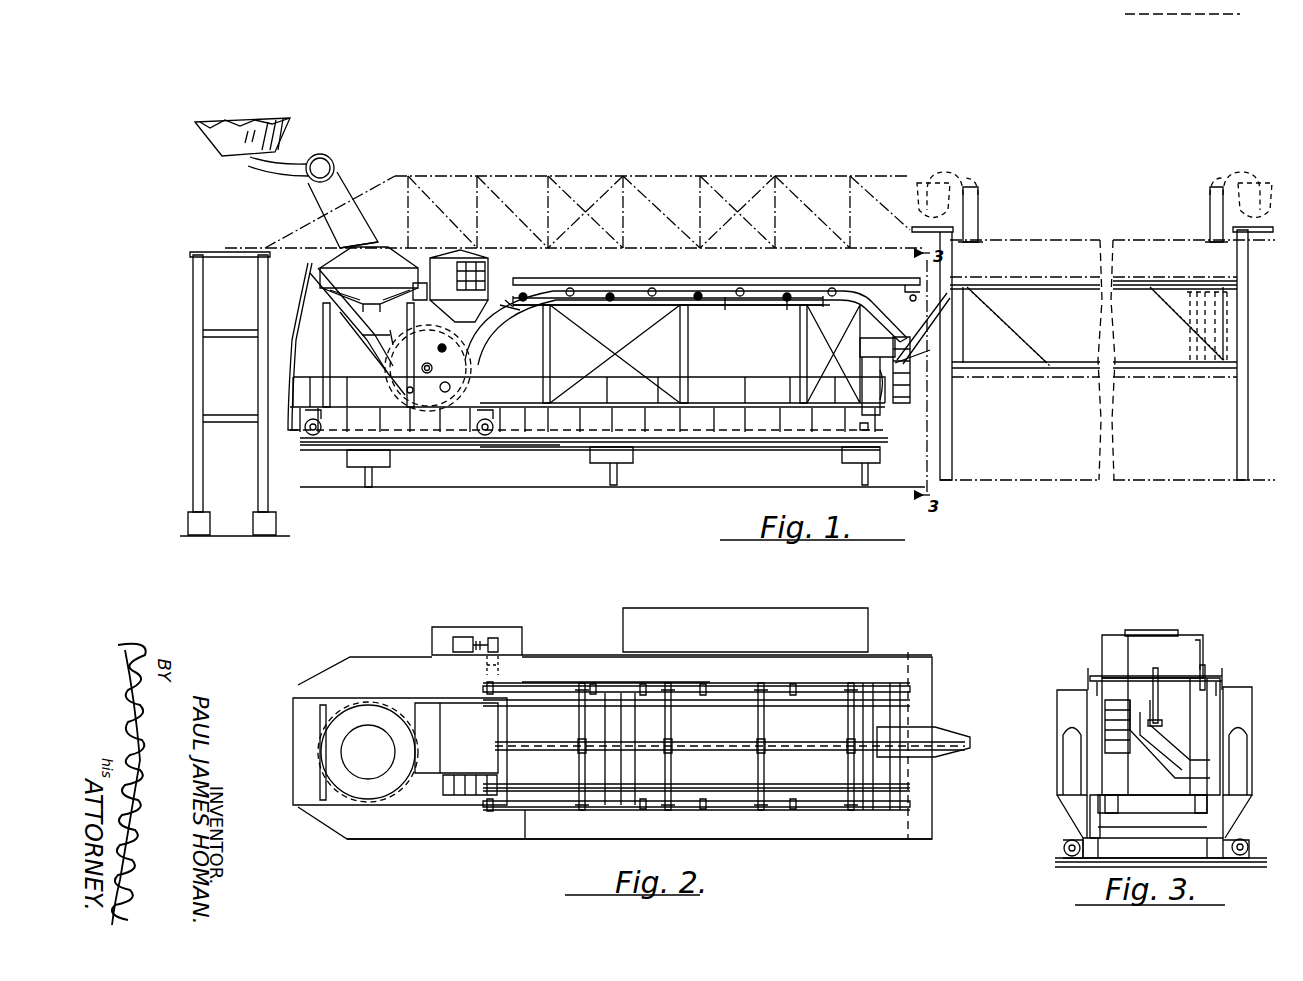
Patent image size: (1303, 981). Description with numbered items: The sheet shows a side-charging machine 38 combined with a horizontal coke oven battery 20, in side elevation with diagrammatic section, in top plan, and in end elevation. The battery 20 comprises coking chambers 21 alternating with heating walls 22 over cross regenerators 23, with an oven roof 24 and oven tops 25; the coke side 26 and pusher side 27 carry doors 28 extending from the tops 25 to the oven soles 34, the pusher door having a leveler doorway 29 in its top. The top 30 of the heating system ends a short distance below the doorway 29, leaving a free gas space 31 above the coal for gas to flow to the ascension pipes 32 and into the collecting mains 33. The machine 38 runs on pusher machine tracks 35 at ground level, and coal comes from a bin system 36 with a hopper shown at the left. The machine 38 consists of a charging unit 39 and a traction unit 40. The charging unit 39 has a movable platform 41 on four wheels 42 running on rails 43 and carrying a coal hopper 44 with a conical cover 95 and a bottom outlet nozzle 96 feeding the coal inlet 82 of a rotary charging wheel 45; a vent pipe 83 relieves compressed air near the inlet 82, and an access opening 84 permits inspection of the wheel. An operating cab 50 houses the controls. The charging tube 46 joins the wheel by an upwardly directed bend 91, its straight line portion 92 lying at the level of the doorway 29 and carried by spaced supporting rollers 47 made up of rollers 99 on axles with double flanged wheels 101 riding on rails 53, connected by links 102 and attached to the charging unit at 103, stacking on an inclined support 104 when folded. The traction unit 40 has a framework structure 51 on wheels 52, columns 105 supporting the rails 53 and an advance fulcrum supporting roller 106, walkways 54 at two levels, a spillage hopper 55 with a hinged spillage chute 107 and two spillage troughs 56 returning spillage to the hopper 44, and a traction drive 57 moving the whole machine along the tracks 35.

In FIG. 1, the horizontal coking retort oven battery 20 is at (1055, 470).
In FIG. 1, the coking chamber 21 is at (1082, 344).
In FIG. 1, the heating wall 22 is at (1227, 312).
In FIG. 1, the cross regenerator 23 is at (1074, 442).
In FIG. 1, the oven roof 24 is at (1042, 247).
In FIG. 1, the oven top 25 is at (1160, 277).
In FIG. 1, the coke side 26 is at (1240, 420).
In FIG. 1, the pusher side 27 is at (950, 433).
In FIG. 1, the coke oven door 28 is at (968, 345).
In FIG. 1, the leveler doorway 29 is at (985, 292).
In FIG. 1, the top of heating system 30 is at (1177, 324).
In FIG. 1, the free gas space 31 is at (1218, 286).
In FIG. 1, the ascension pipe 32 is at (298, 168).
In FIG. 1, the collecting main 33 is at (932, 185).
In FIG. 1, the oven sole 34 is at (1162, 362).
In FIG. 1, the pusher machine track 35 is at (372, 487).
In FIG. 3, the pusher machine track 35 is at (1055, 864).
In FIG. 1, the bin system 36 is at (205, 128).
In FIG. 1, the side charging machine 38 is at (725, 380).
In FIG. 2, the side charging machine 38 is at (572, 661).
In FIG. 1, the charging unit 39 is at (340, 397).
In FIG. 2, the charging unit 39 is at (360, 706).
In FIG. 3, the charging unit 39 is at (1128, 800).
In FIG. 1, the traction unit 40 is at (335, 450).
In FIG. 2, the traction unit 40 is at (382, 661).
In FIG. 3, the traction unit 40 is at (1080, 810).
In FIG. 2, the movable platform 41 is at (298, 738).
In FIG. 1, the wheel 42 is at (480, 433).
In FIG. 3, the wheel 42 is at (1130, 812).
In FIG. 1, the rail 43 is at (495, 443).
In FIG. 2, the rail 43 is at (704, 782).
In FIG. 3, the rail 43 is at (1175, 830).
In FIG. 1, the coal hopper 44 is at (373, 279).
In FIG. 2, the coal hopper 44 is at (398, 758).
In FIG. 1, the charging wheel 45 is at (433, 368).
In FIG. 1, the charging tube 46 is at (652, 288).
In FIG. 2, the charging tube 46 is at (784, 740).
In FIG. 3, the charging tube 46 is at (1160, 676).
In FIG. 1, the supporting roller 47 is at (742, 290).
In FIG. 2, the supporting roller 47 is at (760, 768).
In FIG. 3, the supporting roller 47 is at (1205, 672).
In FIG. 1, the operating cab 50 is at (490, 270).
In FIG. 3, the operating cab 50 is at (1148, 636).
In FIG. 1, the framework structure 51 is at (708, 440).
In FIG. 3, the framework structure 51 is at (1110, 850).
In FIG. 1, the wheel 52 is at (608, 470).
In FIG. 3, the wheel 52 is at (1063, 846).
In FIG. 1, the rail 53 is at (620, 305).
In FIG. 2, the rail 53 is at (685, 690).
In FIG. 3, the rail 53 is at (1085, 684).
In FIG. 1, the walkway 54 is at (810, 278).
In FIG. 2, the walkway 54 is at (770, 660).
In FIG. 3, the walkway 54 is at (1065, 708).
In FIG. 1, the spillage hopper 55 is at (892, 378).
In FIG. 2, the spillage hopper 55 is at (935, 728).
In FIG. 1, the spillage trough 56 is at (300, 305).
In FIG. 2, the traction drive 57 is at (463, 637).
In FIG. 1, the coal inlet 82 is at (351, 320).
In FIG. 1, the pipe 83 is at (372, 356).
In FIG. 1, the access opening 84 is at (443, 392).
In FIG. 1, the upwardly directed bend 91 is at (510, 312).
In FIG. 1, the straight line portion 92 is at (858, 291).
In FIG. 1, the conical cover 95 is at (342, 263).
In FIG. 1, the bottom outlet nozzle 96 is at (362, 336).
In FIG. 1, the roller 99 is at (570, 288).
In FIG. 2, the roller 99 is at (578, 740).
In FIG. 1, the double flanged wheel 101 is at (700, 292).
In FIG. 2, the double flanged wheel 101 is at (590, 680).
In FIG. 1, the link 102 is at (785, 299).
In FIG. 2, the link 102 is at (825, 685).
In FIG. 2, the connection to charging unit 103 is at (487, 688).
In FIG. 1, the inclined support 104 is at (866, 315).
In FIG. 1, the column 105 is at (800, 340).
In FIG. 1, the advance fulcrum supporting roller 106 is at (923, 328).
In FIG. 1, the hinged spillage chute 107 is at (924, 364).